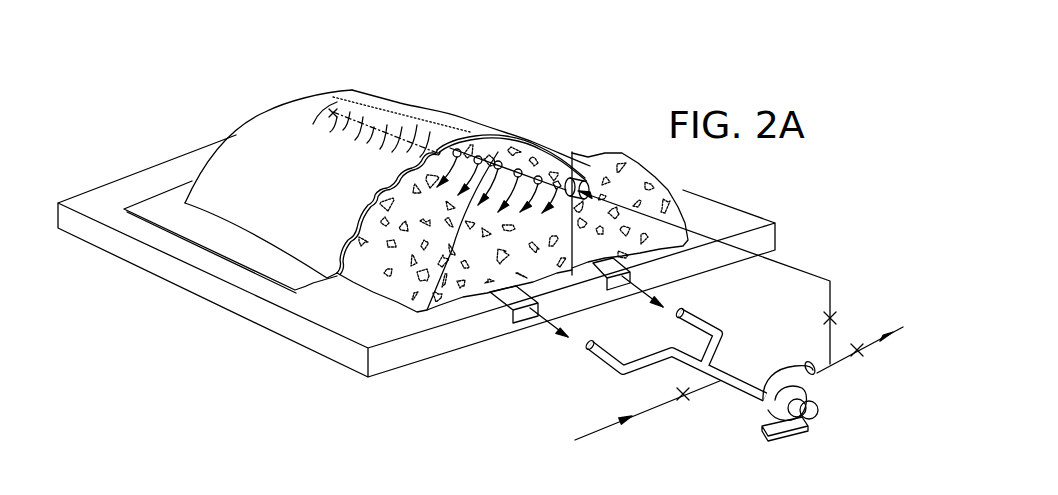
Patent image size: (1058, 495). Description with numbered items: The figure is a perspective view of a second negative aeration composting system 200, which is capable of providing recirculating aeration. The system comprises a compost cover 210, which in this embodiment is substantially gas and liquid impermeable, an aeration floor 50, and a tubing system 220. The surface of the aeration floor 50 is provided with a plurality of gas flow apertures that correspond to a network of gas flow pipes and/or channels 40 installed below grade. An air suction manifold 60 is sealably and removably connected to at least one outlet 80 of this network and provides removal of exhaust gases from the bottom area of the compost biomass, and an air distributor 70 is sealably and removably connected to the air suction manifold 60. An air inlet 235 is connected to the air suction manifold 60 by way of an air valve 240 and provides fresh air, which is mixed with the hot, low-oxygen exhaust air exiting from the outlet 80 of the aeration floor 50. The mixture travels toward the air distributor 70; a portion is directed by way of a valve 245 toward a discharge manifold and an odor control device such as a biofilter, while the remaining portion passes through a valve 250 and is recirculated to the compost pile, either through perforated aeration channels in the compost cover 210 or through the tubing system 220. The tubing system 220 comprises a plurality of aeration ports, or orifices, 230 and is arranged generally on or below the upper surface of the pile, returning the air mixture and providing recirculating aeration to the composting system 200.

The negative aeration composting system 200 is at (231, 90).
The compost cover 210 is at (460, 123).
The tubing system 220 is at (507, 150).
The aeration ports 230 is at (572, 152).
The aeration floor 50 is at (125, 222).
The gas flow pipes and/or channels 40 is at (637, 272).
The outlet 80 is at (517, 324).
The air suction manifold 60 is at (604, 357).
The air distributor 70 is at (800, 437).
The air inlet 235 is at (657, 410).
The air valve 240 is at (683, 400).
The valve 245 is at (857, 358).
The valve 250 is at (823, 320).